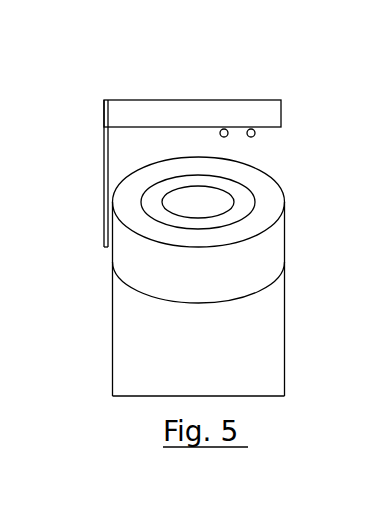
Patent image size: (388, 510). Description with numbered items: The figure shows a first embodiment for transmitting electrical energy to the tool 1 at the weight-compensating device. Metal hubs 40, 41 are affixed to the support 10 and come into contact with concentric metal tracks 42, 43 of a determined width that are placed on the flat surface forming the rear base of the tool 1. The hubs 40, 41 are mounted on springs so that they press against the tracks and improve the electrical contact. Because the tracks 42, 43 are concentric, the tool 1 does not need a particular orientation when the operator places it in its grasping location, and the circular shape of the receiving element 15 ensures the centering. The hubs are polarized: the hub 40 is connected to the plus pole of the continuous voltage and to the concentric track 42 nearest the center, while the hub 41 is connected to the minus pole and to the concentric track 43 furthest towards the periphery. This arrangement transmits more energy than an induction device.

The tool 1 is at (283, 330).
The support 10 is at (143, 100).
The receiving element 15 is at (104, 125).
The metal hub 40 is at (224, 129).
The metal hub 41 is at (252, 129).
The concentric metal track 42 is at (182, 202).
The concentric metal track 43 is at (243, 202).